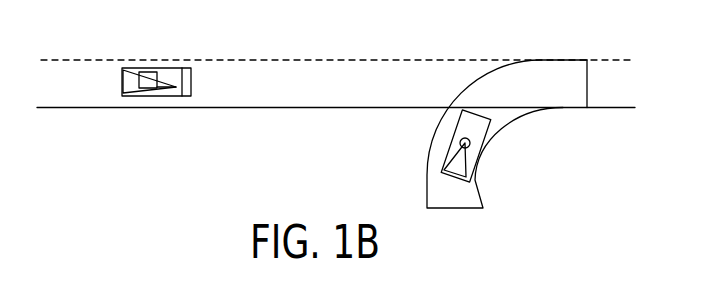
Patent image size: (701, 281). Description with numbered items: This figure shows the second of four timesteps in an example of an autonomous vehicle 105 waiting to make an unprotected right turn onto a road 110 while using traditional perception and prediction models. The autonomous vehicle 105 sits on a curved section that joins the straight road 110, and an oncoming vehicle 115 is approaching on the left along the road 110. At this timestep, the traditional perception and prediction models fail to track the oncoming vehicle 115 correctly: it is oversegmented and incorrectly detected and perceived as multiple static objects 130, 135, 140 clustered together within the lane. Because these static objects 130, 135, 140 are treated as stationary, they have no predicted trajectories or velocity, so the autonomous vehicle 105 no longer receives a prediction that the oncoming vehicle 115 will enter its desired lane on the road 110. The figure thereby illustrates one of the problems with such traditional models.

The autonomous vehicle 105 is at (477, 152).
The road 110 is at (358, 108).
The oncoming vehicle 115 is at (167, 97).
The static object 130 is at (191, 78).
The static object 135 is at (153, 80).
The static object 140 is at (153, 97).